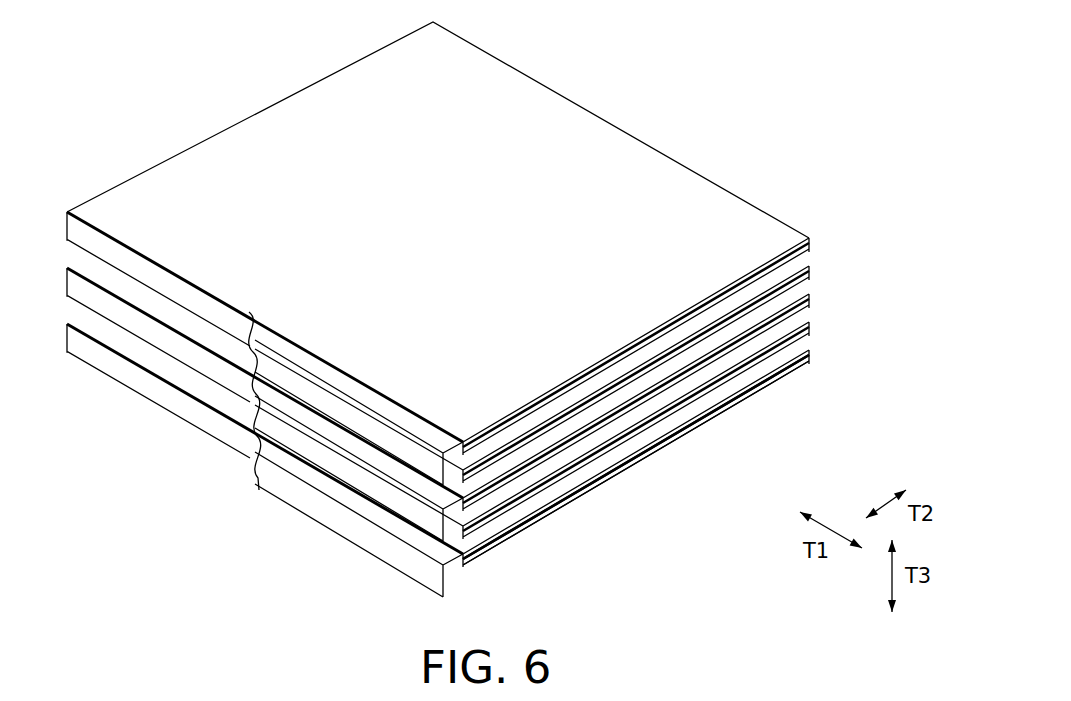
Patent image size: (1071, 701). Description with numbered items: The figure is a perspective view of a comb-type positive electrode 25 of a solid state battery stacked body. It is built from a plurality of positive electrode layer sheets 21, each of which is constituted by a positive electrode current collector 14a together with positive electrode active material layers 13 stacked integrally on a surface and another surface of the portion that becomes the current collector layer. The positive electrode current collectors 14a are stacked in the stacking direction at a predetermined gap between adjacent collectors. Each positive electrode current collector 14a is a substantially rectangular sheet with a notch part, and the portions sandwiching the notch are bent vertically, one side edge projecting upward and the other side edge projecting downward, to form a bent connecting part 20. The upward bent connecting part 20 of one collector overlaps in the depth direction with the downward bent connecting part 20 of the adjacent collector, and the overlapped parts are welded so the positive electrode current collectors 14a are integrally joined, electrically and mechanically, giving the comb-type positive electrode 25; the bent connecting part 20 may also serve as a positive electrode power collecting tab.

The comb-type positive electrode 25 is at (483, 316).
The positive electrode layer sheet 21 is at (722, 184).
The bent connecting part 20 is at (152, 278).
The positive electrode active material layer 13 is at (727, 415).
The positive electrode current collector 14a is at (776, 385).